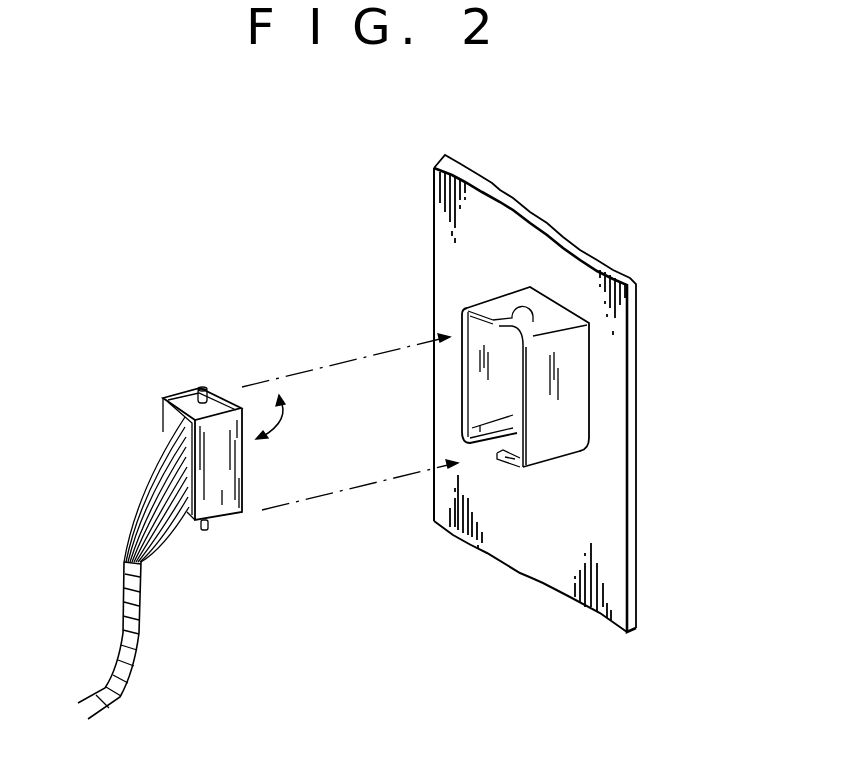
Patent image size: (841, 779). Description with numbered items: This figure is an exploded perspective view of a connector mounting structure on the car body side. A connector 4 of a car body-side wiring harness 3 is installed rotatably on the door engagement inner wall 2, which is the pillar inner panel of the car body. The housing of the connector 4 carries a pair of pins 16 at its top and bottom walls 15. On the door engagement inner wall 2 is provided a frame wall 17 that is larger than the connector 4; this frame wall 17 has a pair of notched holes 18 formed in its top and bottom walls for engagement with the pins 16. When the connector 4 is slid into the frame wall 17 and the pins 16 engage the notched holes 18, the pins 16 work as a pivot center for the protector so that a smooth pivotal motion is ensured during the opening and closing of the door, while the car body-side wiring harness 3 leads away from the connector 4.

The door engagement inner wall 2 is at (628, 440).
The car body-side wiring harness 3 is at (143, 623).
The connector 4 is at (242, 516).
The top and bottom walls 15 is at (192, 398).
The pins 16 is at (205, 388).
The frame wall 17 is at (558, 443).
The notched holes 18 is at (525, 308).